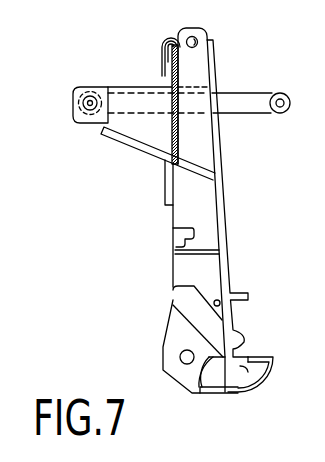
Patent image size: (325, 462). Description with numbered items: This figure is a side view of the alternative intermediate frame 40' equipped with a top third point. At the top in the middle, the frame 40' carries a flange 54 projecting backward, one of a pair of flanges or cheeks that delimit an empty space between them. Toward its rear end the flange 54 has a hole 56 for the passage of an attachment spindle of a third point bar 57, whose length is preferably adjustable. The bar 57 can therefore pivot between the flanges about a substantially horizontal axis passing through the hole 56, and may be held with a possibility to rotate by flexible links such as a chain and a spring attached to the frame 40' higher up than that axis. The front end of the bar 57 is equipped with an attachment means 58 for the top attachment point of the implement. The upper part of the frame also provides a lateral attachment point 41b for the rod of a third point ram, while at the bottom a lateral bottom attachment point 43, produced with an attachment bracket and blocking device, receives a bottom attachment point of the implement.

The lateral attachment point 41b is at (161, 37).
The hole 56 is at (88, 97).
The third point bar 57 is at (238, 101).
The attachment means 58 is at (287, 94).
The flange 54 is at (142, 133).
The intermediate frame 40' is at (148, 276).
The lateral bottom attachment point 43 is at (244, 381).